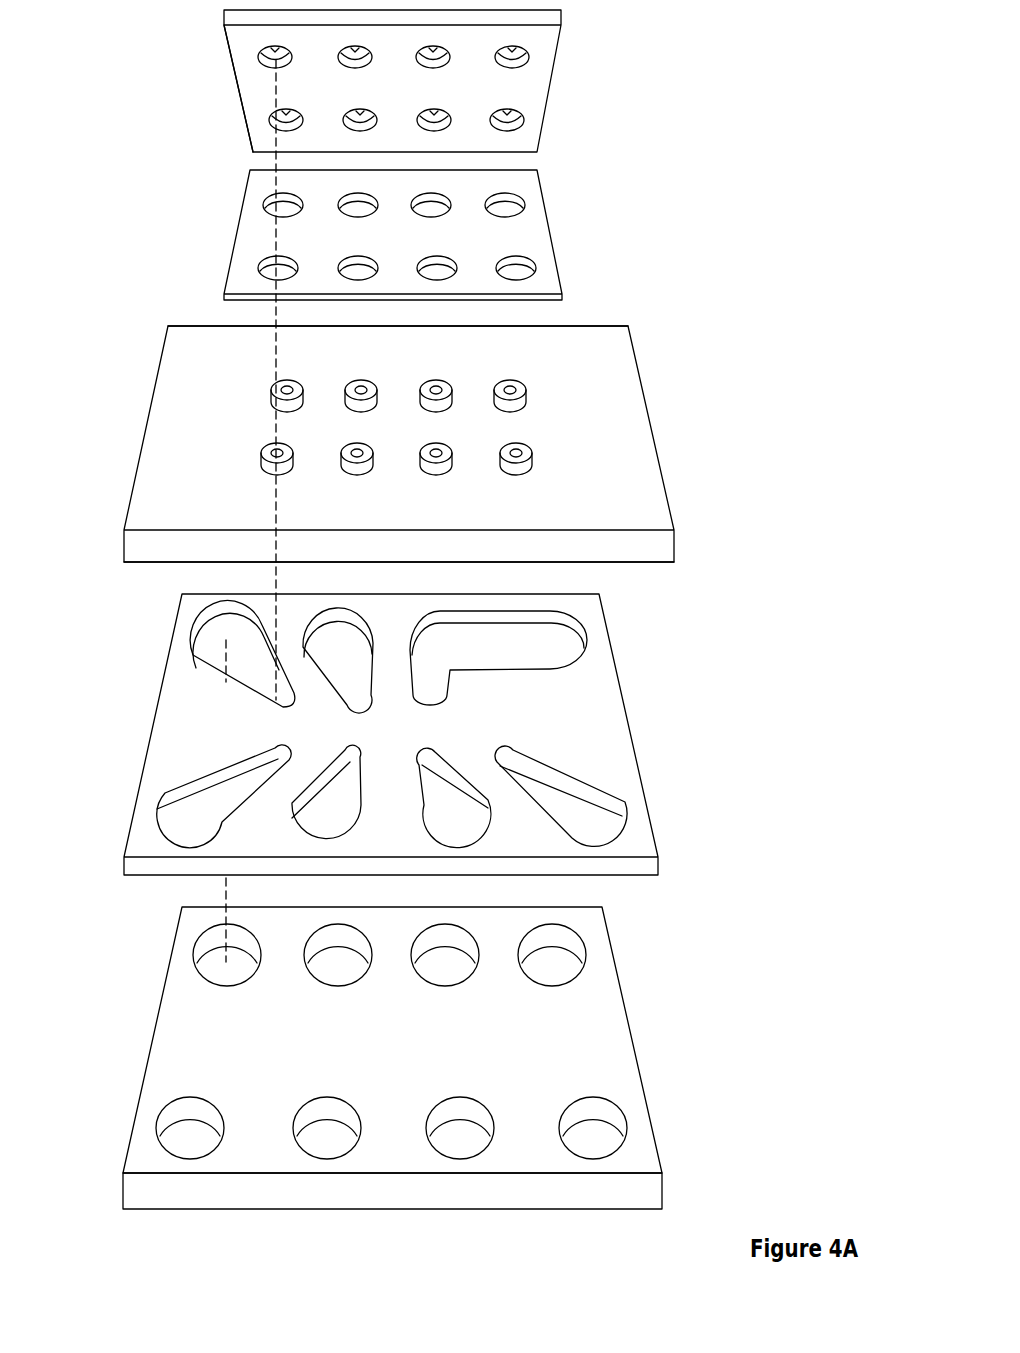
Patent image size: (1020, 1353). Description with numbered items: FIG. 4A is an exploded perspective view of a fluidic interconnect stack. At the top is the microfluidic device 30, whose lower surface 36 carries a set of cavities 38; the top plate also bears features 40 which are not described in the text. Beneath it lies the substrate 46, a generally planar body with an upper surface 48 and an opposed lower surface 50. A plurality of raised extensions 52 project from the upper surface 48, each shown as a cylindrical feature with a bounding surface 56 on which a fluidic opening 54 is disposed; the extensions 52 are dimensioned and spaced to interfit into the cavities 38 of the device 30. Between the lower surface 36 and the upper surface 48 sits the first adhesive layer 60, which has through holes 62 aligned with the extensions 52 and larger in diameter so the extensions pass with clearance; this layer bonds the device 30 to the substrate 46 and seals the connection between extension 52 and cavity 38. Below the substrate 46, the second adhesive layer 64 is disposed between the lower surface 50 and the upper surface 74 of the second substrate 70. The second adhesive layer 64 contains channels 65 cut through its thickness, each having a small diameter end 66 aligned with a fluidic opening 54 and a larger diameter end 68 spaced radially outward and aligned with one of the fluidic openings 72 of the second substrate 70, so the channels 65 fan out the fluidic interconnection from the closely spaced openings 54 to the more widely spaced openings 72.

The microfluidic device 30 is at (563, 18).
The lower surface 36 is at (250, 100).
The cavities 38 is at (508, 65).
The dome opening 40 is at (525, 60).
The substrate 46 is at (663, 470).
The upper surface 48 is at (632, 398).
The lower surface 50 is at (660, 572).
The raised extensions 52 is at (530, 461).
The fluidic opening 54 is at (520, 450).
The bounding surface 56 is at (522, 452).
The first adhesive layer 60 is at (246, 201).
The through holes 62 is at (268, 205).
The second adhesive layer 64 is at (626, 710).
The channels 65 is at (238, 669).
The small diameter end 66 is at (283, 705).
The larger diameter end 68 is at (212, 621).
The second substrate 70 is at (151, 1047).
The fluidic openings 72 is at (213, 948).
The upper surface 74 is at (605, 1030).